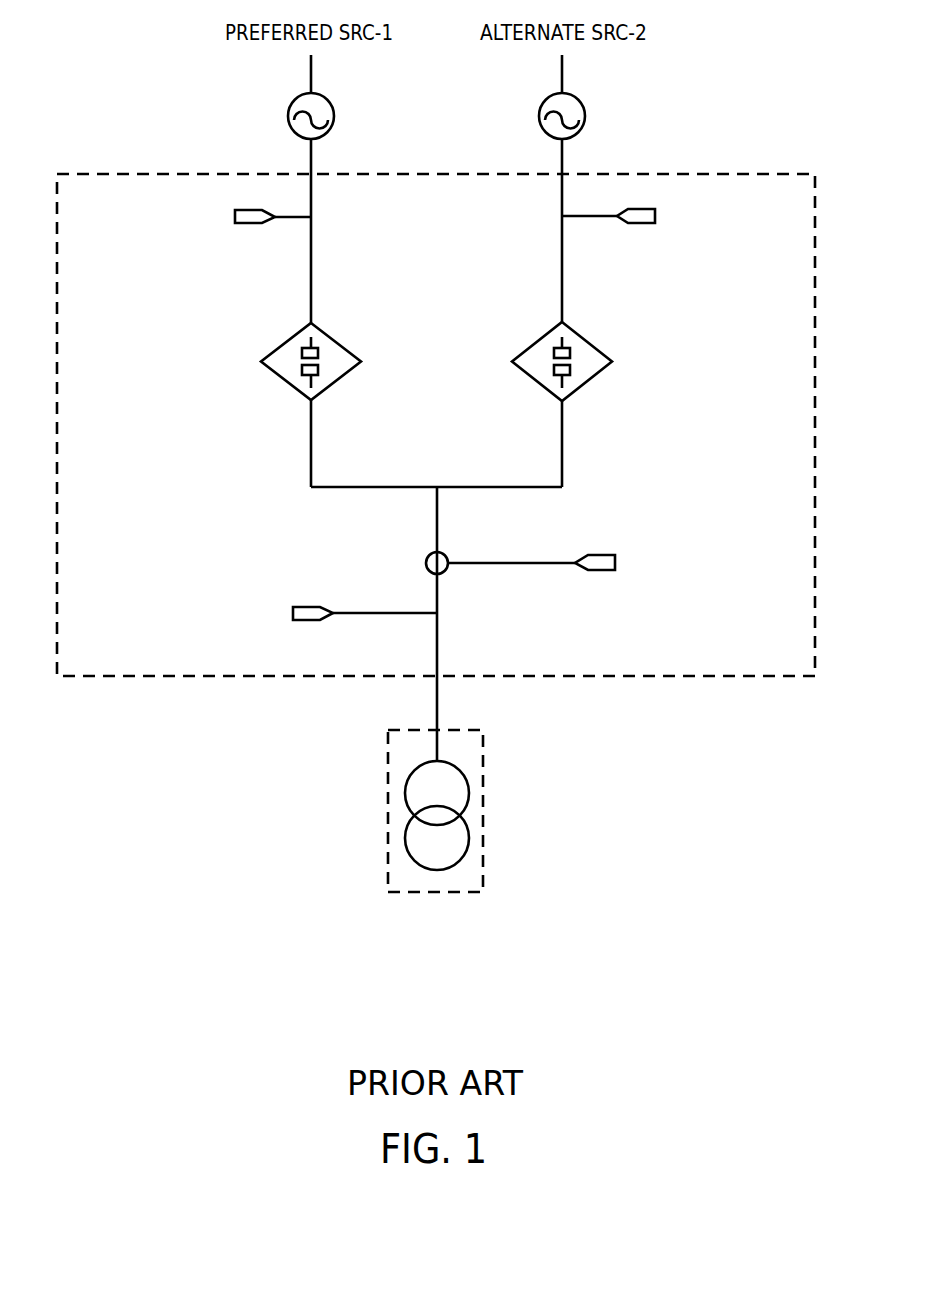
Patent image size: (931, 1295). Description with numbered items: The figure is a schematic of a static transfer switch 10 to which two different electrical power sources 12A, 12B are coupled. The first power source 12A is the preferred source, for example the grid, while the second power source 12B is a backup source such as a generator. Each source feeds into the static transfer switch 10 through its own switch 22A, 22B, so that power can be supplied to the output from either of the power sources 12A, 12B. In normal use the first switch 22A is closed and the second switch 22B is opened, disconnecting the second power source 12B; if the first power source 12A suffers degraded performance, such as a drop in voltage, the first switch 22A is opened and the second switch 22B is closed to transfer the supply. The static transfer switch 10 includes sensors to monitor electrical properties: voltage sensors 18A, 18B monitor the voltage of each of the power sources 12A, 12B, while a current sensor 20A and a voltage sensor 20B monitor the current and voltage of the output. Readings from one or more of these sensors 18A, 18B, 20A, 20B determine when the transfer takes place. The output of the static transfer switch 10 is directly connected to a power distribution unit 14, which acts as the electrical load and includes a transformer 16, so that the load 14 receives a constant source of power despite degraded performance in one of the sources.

The static transfer switch 10 is at (157, 142).
The first power source 12A is at (288, 116).
The second power source 12B is at (585, 116).
The power distribution unit 14 is at (485, 746).
The transformer 16 is at (468, 805).
The voltage sensor 18A is at (250, 224).
The voltage sensor 18B is at (643, 224).
The current sensor 20A is at (600, 552).
The voltage sensor 20B is at (306, 604).
The first switch 22A is at (273, 338).
The second switch 22B is at (591, 338).